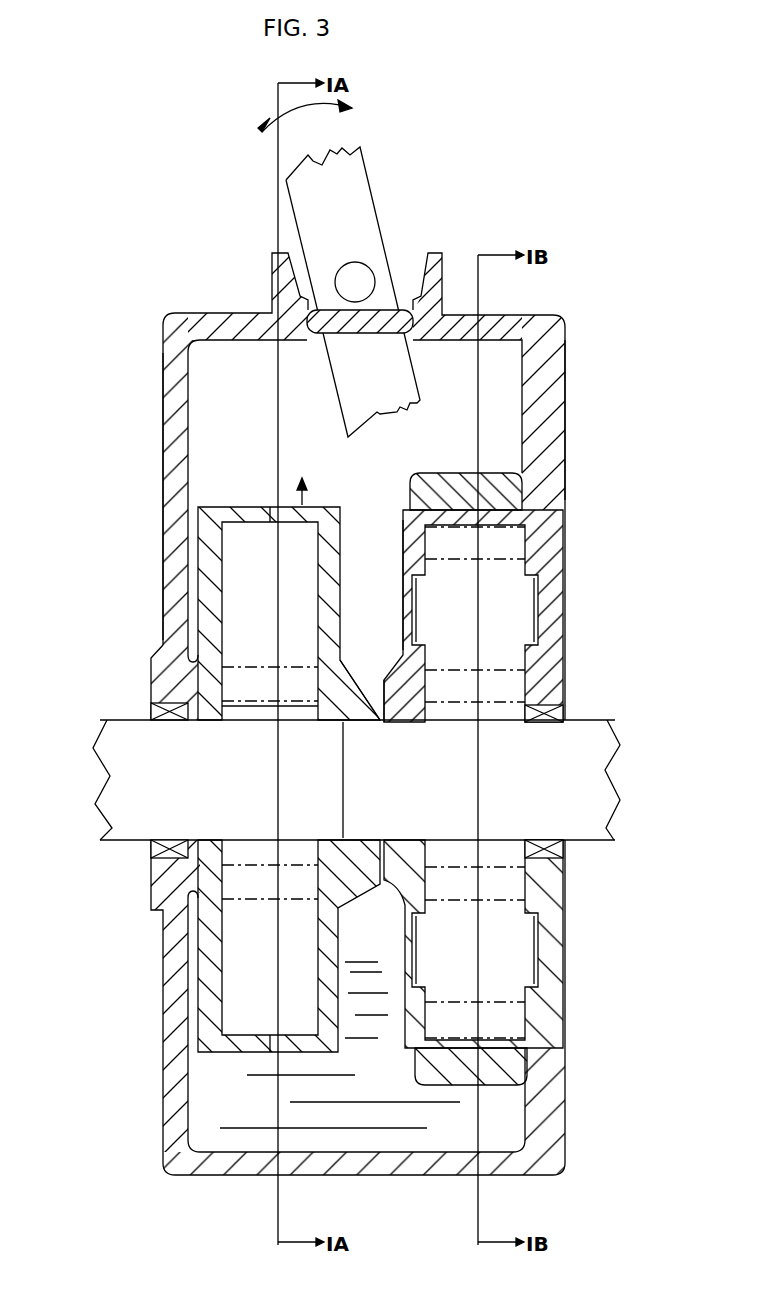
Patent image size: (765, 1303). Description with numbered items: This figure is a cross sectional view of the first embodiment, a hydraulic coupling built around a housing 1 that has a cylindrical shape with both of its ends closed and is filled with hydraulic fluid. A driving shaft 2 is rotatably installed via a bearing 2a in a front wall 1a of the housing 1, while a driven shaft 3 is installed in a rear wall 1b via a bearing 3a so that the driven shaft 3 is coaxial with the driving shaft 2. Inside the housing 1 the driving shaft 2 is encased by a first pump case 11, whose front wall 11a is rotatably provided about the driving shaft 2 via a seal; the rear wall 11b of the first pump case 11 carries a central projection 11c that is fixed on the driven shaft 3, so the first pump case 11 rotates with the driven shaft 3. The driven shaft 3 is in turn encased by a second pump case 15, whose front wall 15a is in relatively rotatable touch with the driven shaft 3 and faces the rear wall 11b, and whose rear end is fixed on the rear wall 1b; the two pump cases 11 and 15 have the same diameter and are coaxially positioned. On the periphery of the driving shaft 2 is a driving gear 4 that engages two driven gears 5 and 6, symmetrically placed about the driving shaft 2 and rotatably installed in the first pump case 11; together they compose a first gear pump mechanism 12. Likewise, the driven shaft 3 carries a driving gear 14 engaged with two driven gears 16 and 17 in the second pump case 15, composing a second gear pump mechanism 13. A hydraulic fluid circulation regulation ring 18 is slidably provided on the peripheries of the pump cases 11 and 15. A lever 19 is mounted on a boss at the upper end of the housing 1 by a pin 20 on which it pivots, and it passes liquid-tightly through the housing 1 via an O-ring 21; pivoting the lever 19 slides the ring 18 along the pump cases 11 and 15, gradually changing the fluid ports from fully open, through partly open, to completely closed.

The housing 1 is at (552, 1108).
The front wall 1a is at (178, 425).
The rear wall 1b is at (556, 450).
The driving shaft 2 is at (125, 828).
The bearing 2a is at (172, 708).
The driven shaft 3 is at (500, 736).
The bearing 3a is at (553, 862).
The driving gear 4 is at (242, 845).
The driven gear 5 is at (227, 589).
The driven gear 6 is at (235, 1015).
The first pump case 11 is at (197, 1050).
The front wall 11a is at (195, 590).
The rear wall 11b is at (372, 622).
The projection 11c is at (381, 705).
The first gear pump mechanism 12 is at (263, 1050).
The second gear pump mechanism 13 is at (520, 513).
The driving gear 14 is at (543, 713).
The second pump case 15 is at (413, 1050).
The front wall 15a is at (402, 587).
The driven gear 16 is at (505, 548).
The driven gear 17 is at (498, 1022).
The ring 18 is at (483, 1085).
The lever 19 is at (355, 185).
The pin 20 is at (358, 280).
The O-ring 21 is at (405, 320).